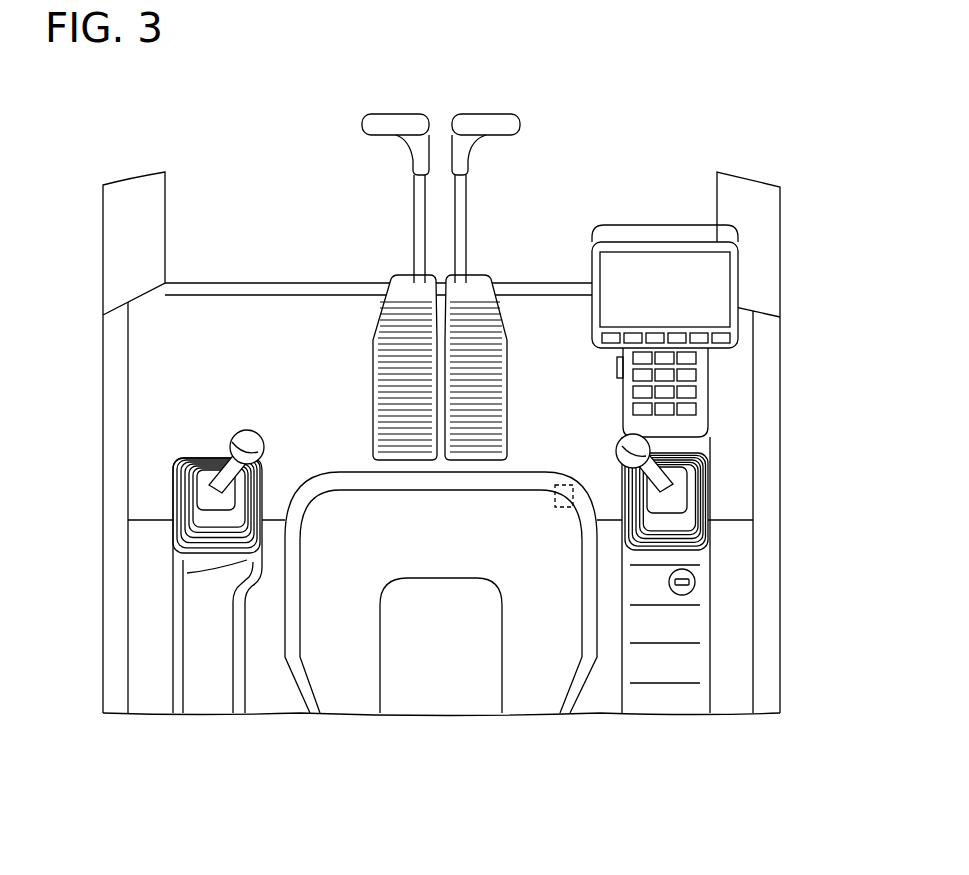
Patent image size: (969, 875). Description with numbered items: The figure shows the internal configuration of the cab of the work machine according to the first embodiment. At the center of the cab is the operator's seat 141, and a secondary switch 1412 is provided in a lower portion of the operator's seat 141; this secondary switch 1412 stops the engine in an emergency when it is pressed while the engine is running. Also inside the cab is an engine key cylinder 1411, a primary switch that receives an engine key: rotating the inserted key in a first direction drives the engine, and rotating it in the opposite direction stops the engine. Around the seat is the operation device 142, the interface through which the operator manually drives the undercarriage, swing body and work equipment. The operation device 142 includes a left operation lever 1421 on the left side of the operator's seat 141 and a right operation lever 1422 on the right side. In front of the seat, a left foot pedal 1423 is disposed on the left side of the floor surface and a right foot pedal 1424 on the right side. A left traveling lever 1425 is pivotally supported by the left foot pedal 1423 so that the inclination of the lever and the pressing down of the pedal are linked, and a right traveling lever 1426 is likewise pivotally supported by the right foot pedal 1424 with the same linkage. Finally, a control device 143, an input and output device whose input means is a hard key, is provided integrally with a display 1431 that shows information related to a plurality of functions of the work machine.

The operator's seat 141 is at (443, 698).
The engine key cylinder 1411 is at (695, 576).
The secondary switch 1412 is at (562, 485).
The operation device 142 is at (255, 168).
The left operation lever 1421 is at (248, 432).
The right operation lever 1422 is at (652, 446).
The left foot pedal 1423 is at (396, 275).
The right foot pedal 1424 is at (483, 275).
The left traveling lever 1425 is at (393, 113).
The right traveling lever 1426 is at (488, 113).
The control device 143 is at (708, 370).
The display 1431 is at (738, 270).